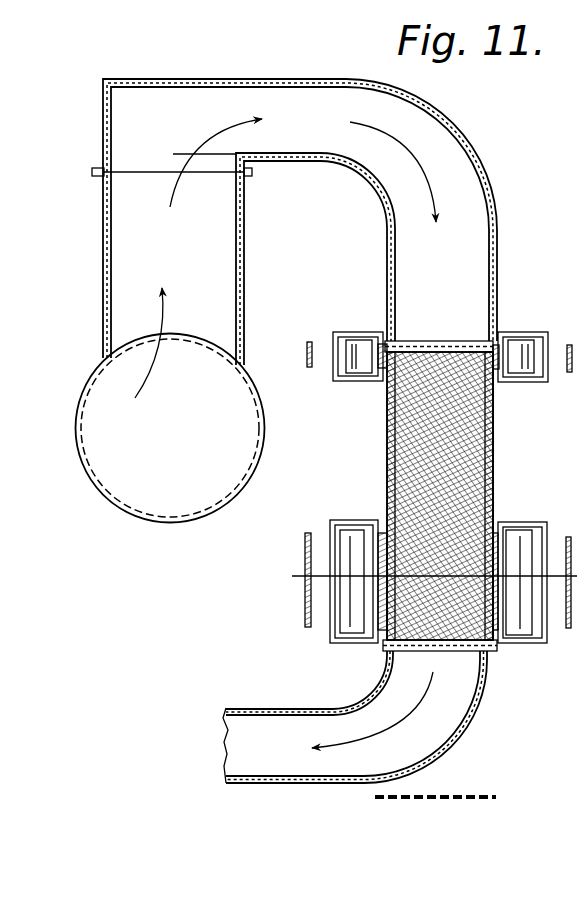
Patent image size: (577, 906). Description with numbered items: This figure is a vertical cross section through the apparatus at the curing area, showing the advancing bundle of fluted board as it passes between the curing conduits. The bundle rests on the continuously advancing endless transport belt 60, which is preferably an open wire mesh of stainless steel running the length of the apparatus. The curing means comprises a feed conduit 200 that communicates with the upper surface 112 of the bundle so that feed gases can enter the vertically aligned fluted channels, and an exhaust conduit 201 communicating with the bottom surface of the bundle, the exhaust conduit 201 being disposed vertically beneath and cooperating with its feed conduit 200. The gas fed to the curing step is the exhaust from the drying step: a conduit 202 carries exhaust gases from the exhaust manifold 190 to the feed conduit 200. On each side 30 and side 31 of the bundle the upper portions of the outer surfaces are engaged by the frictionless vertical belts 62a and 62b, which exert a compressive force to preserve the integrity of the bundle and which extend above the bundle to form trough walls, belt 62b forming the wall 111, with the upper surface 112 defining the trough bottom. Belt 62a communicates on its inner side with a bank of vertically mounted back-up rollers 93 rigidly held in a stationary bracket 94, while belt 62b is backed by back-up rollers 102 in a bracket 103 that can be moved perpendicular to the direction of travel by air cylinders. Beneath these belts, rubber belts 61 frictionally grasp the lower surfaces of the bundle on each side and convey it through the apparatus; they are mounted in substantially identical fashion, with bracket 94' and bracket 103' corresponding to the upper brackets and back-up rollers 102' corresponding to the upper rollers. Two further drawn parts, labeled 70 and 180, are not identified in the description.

The feed conduit 200 is at (427, 125).
The conduit 202 is at (218, 239).
The exhaust manifold 190 is at (188, 514).
The upper surface 112 is at (438, 343).
The side 30 is at (386, 462).
The filter side wall 70 is at (384, 440).
The side 31 is at (496, 460).
The filter edge 180 is at (535, 496).
The wall 111 is at (458, 649).
The second frictionless belt 62b is at (362, 332).
The frictionless vertical belt 62a is at (506, 332).
The bracket 103 is at (295, 365).
The back-up rollers 102 is at (331, 374).
The back-up rollers 93 is at (545, 382).
The stationary bracket 94 is at (524, 386).
The bracket 103' is at (331, 569).
The back-up rollers 102' is at (325, 594).
The bracket 94' is at (532, 562).
The endless belt 61 is at (300, 576).
The exhaust conduit 201 is at (276, 710).
The transport belt 60 is at (458, 797).